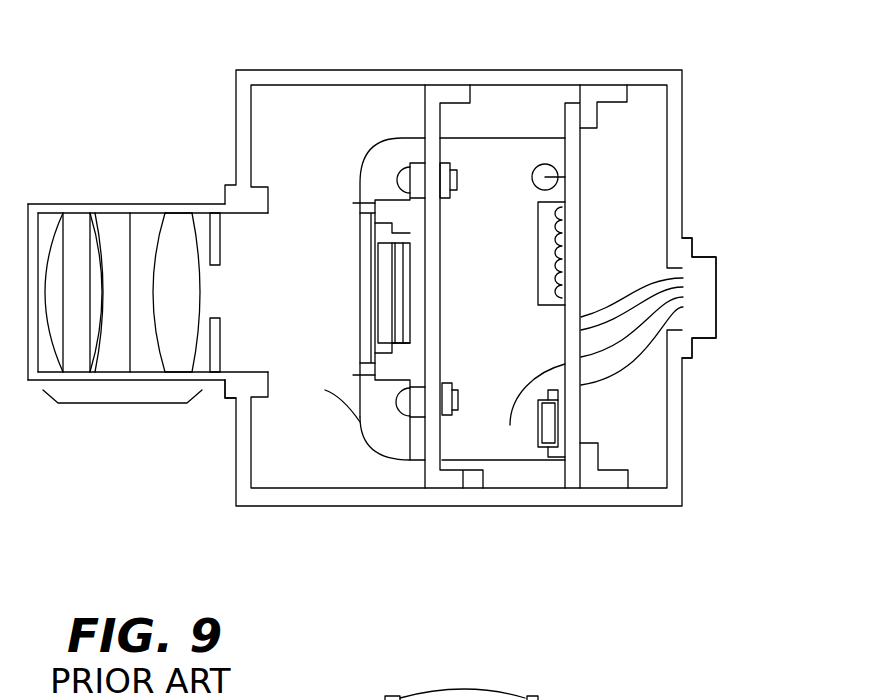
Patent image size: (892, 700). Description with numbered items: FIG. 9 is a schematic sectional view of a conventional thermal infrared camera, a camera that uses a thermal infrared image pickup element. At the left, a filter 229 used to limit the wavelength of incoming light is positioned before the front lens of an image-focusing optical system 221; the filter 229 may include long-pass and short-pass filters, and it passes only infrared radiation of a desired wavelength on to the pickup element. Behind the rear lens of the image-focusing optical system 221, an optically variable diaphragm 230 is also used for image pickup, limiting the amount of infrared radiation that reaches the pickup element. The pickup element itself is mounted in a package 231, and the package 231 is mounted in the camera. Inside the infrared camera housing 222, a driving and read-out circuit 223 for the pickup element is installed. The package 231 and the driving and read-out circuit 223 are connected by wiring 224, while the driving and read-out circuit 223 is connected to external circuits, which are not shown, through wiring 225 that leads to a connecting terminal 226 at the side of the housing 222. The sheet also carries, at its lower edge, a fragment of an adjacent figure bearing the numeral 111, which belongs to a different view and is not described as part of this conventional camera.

The image-focusing optical system 221 is at (122, 405).
The infrared camera housing 222 is at (447, 77).
The driving and read-out circuit 223 is at (510, 425).
The wiring 224 is at (408, 460).
The wiring 225 is at (610, 333).
The connecting terminal 226 is at (702, 283).
The filter 229 is at (30, 347).
The optically variable diaphragm 230 is at (222, 387).
The package 231 is at (325, 392).
The housing (other figure) 111 is at (490, 693).